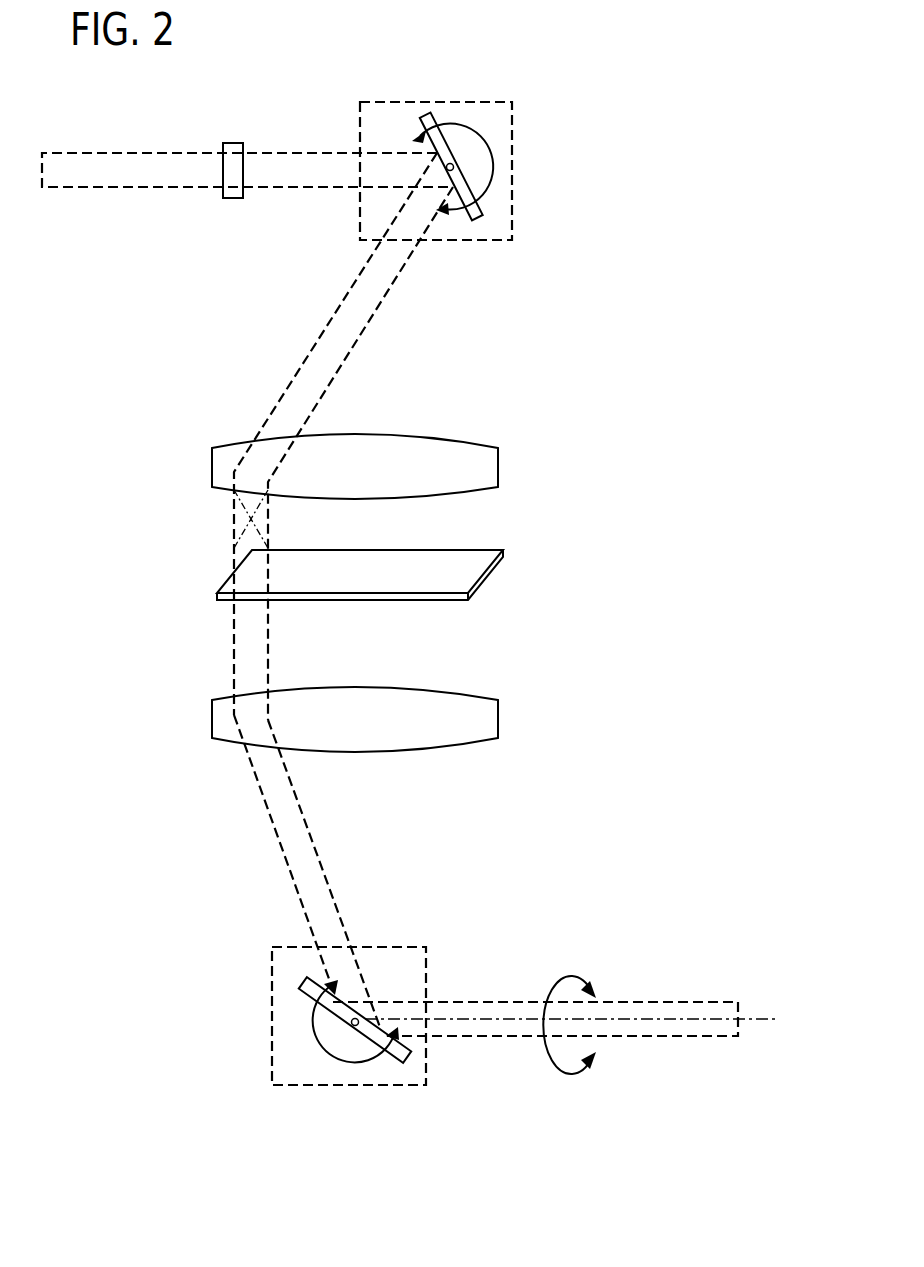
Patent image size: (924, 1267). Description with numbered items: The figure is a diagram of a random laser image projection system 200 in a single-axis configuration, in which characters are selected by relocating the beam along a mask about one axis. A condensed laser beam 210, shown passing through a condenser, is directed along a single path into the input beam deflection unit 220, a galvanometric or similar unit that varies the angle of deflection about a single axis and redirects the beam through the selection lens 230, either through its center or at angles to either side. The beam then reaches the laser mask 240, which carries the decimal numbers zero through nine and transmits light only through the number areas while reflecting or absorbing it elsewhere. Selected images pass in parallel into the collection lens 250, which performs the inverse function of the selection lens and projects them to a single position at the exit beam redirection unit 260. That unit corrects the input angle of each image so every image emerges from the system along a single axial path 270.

The random laser image projection system 200 is at (617, 235).
The laser beam 210 is at (92, 183).
The input beam deflection unit 220 is at (506, 158).
The selection lens 230 is at (472, 450).
The laser mask 240 is at (478, 556).
The collection lens 250 is at (462, 702).
The exit beam redirection unit 260 is at (396, 953).
The axial path 270 is at (760, 1018).